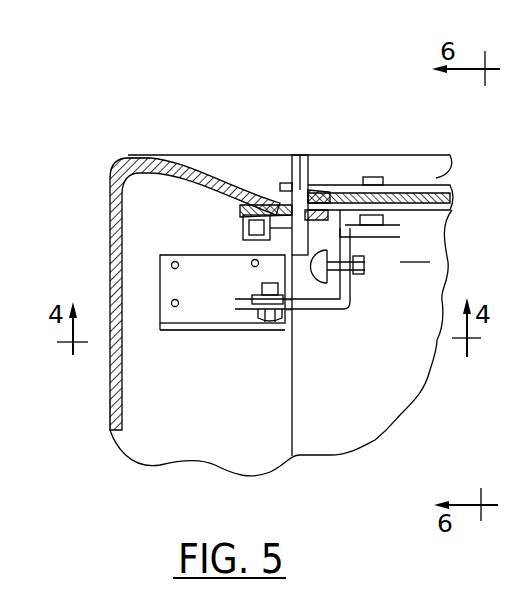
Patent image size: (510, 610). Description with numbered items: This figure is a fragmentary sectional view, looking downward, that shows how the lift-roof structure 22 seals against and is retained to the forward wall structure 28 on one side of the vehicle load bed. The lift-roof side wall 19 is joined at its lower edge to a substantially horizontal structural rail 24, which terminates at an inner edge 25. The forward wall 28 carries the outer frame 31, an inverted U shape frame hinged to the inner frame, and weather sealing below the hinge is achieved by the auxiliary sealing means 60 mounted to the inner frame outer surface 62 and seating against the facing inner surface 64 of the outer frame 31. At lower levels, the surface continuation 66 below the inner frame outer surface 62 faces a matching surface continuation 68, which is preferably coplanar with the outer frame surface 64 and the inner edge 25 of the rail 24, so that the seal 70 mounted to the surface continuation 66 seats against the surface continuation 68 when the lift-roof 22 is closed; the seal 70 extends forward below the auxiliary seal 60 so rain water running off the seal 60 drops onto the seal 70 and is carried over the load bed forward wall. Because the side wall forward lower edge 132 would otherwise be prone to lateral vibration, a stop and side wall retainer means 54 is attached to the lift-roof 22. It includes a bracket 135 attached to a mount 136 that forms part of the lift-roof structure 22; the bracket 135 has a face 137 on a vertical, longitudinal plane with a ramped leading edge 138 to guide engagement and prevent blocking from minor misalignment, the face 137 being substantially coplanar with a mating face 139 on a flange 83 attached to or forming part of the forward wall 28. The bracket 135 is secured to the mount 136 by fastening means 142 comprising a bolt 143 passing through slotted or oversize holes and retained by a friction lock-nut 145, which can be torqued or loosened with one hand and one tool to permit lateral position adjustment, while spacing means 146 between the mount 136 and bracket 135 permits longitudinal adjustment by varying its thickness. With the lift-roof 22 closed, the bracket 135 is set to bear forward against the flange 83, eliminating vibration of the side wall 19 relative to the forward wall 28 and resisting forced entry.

The side wall 19 is at (107, 388).
The lift-roof structure 22 is at (110, 273).
The structural rail 24 is at (249, 452).
The inner edge 25 is at (294, 428).
The forward wall structure 28 is at (452, 155).
The outer frame 31 is at (268, 200).
The stop and side wall retainer means 54 is at (190, 260).
The auxiliary sealing means 60 is at (346, 186).
The inner frame outer surface 62 is at (345, 182).
The inner surface 64 is at (290, 165).
The surface continuation 66 is at (322, 186).
The surface continuation 68 is at (285, 190).
The seal 70 is at (300, 172).
The flange 83 is at (402, 262).
The side wall forward lower edge 132 is at (128, 157).
The bracket 135 is at (338, 308).
The mount 136 is at (202, 310).
The face 137 is at (352, 276).
The ramped leading edge 138 is at (340, 228).
The mating face 139 is at (252, 286).
The fastening means 142 is at (293, 340).
The bolt 143 is at (268, 335).
The friction lock-nut 145 is at (258, 298).
The spacing means 146 is at (205, 345).